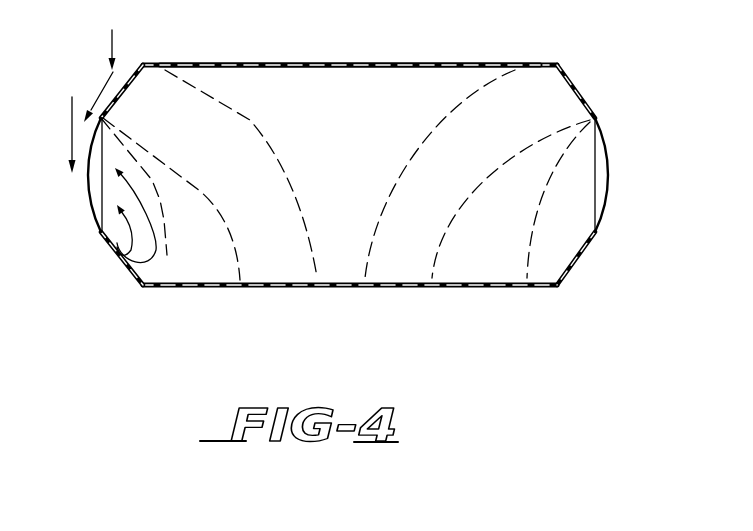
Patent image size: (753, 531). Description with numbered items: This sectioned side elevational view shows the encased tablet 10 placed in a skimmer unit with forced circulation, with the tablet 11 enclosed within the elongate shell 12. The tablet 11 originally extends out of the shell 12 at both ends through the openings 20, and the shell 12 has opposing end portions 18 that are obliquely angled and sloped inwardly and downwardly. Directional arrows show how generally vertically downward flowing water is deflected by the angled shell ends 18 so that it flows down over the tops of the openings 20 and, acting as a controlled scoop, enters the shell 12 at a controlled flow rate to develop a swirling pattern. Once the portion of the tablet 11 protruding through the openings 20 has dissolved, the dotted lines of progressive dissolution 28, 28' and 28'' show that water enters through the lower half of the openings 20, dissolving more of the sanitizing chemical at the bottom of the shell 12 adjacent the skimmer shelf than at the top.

The encased tablet 10 is at (489, 49).
The tablet 11 is at (88, 198).
The shell 12 is at (355, 65).
The end portions 18 is at (104, 112).
The openings 20 is at (100, 143).
The lines of progressive dissolution 28 is at (362, 235).
The lines of progressive dissolution 28' is at (346, 241).
The lines of progressive dissolution 28'' is at (340, 218).